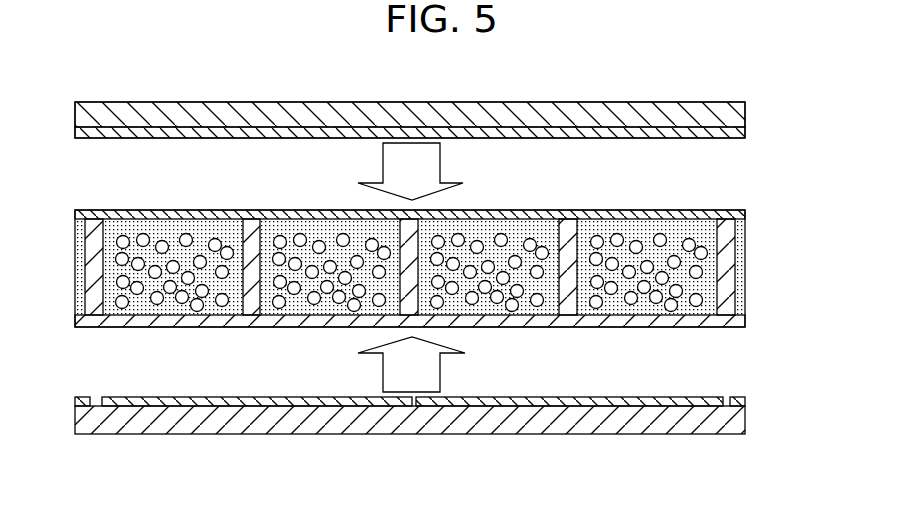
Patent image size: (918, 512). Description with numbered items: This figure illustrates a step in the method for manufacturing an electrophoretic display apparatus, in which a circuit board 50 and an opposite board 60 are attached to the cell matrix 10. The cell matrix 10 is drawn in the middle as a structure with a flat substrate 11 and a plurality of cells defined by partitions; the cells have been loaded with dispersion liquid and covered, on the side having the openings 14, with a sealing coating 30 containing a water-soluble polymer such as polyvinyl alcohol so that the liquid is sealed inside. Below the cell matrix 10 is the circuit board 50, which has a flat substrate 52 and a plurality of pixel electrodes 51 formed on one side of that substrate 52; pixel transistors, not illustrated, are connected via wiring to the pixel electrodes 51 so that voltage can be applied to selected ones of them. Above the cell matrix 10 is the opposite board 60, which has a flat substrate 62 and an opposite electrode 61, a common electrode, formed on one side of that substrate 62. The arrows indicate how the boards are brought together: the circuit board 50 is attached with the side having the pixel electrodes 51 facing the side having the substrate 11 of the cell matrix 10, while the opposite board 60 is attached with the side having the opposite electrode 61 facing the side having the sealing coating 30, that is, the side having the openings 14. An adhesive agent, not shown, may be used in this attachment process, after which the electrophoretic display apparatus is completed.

The cell matrix 10 is at (448, 267).
The substrate 11 is at (688, 328).
The openings 14 is at (621, 209).
The sealing coating 30 is at (520, 210).
The circuit board 50 is at (438, 410).
The pixel electrodes 51 is at (604, 398).
The substrate 52 is at (604, 421).
The opposite board 60 is at (438, 125).
The opposite electrode 61 is at (688, 139).
The substrate 62 is at (682, 113).